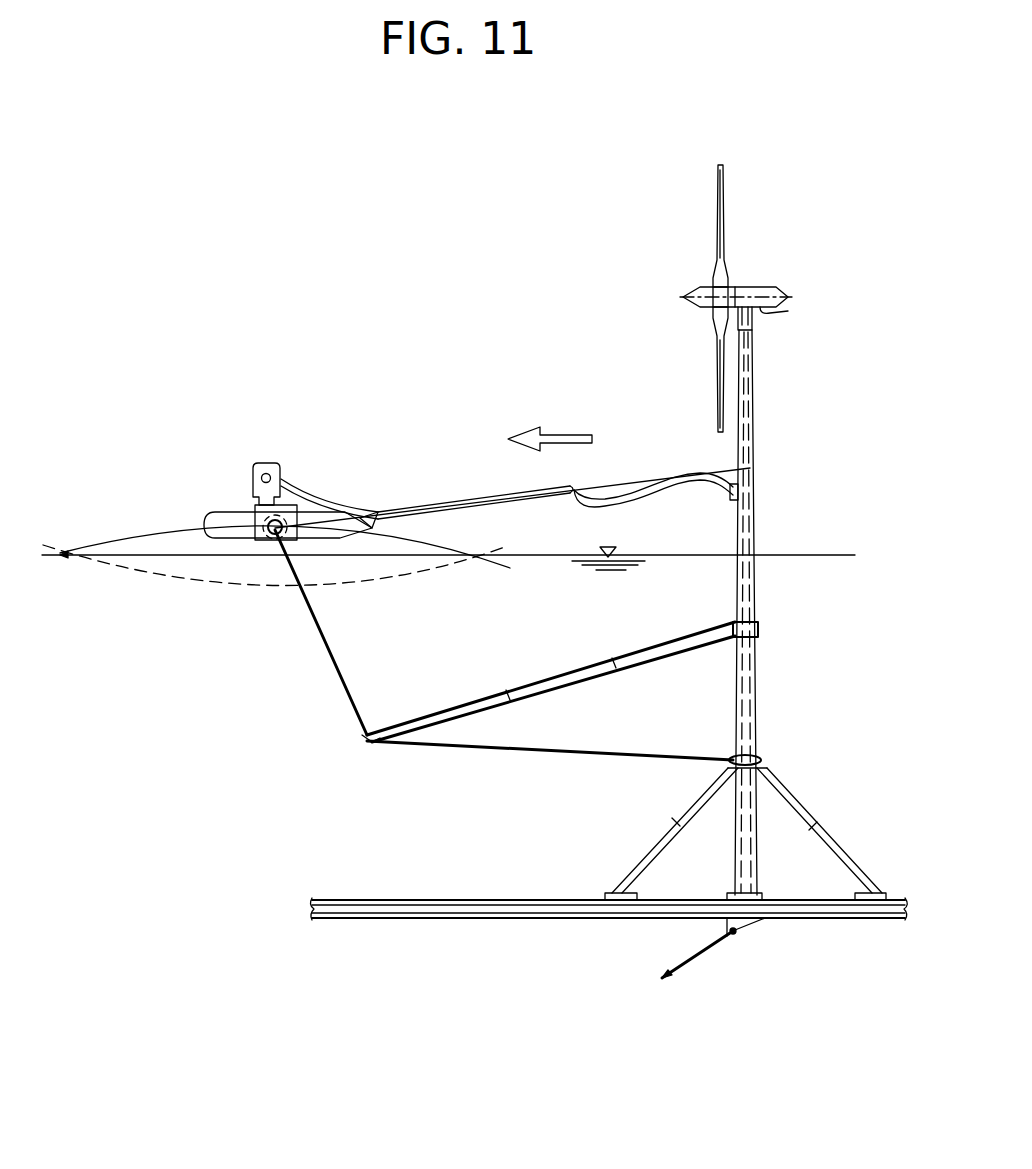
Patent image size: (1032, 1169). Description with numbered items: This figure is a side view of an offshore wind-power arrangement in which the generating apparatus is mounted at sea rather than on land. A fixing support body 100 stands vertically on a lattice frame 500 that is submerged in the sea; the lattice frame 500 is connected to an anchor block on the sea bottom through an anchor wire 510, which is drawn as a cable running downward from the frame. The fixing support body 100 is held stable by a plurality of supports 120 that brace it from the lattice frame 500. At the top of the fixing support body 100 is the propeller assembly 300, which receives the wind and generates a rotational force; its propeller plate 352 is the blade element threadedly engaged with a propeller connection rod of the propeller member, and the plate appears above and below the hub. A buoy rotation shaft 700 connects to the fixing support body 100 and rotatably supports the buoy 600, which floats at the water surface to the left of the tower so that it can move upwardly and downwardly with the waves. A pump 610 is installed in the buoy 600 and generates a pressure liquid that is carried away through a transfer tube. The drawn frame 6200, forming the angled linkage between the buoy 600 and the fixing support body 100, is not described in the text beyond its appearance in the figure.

The fixing support body 100 is at (750, 830).
The supports 120 is at (846, 855).
The propeller assembly 300 is at (700, 281).
The propeller plate 352 is at (718, 195).
The lattice frame 500 is at (495, 918).
The anchor wire 510 is at (693, 962).
The buoy 600 is at (215, 512).
The pump 610 is at (266, 463).
The buoy rotation shaft 700 is at (752, 513).
The support frame 6200 is at (650, 662).